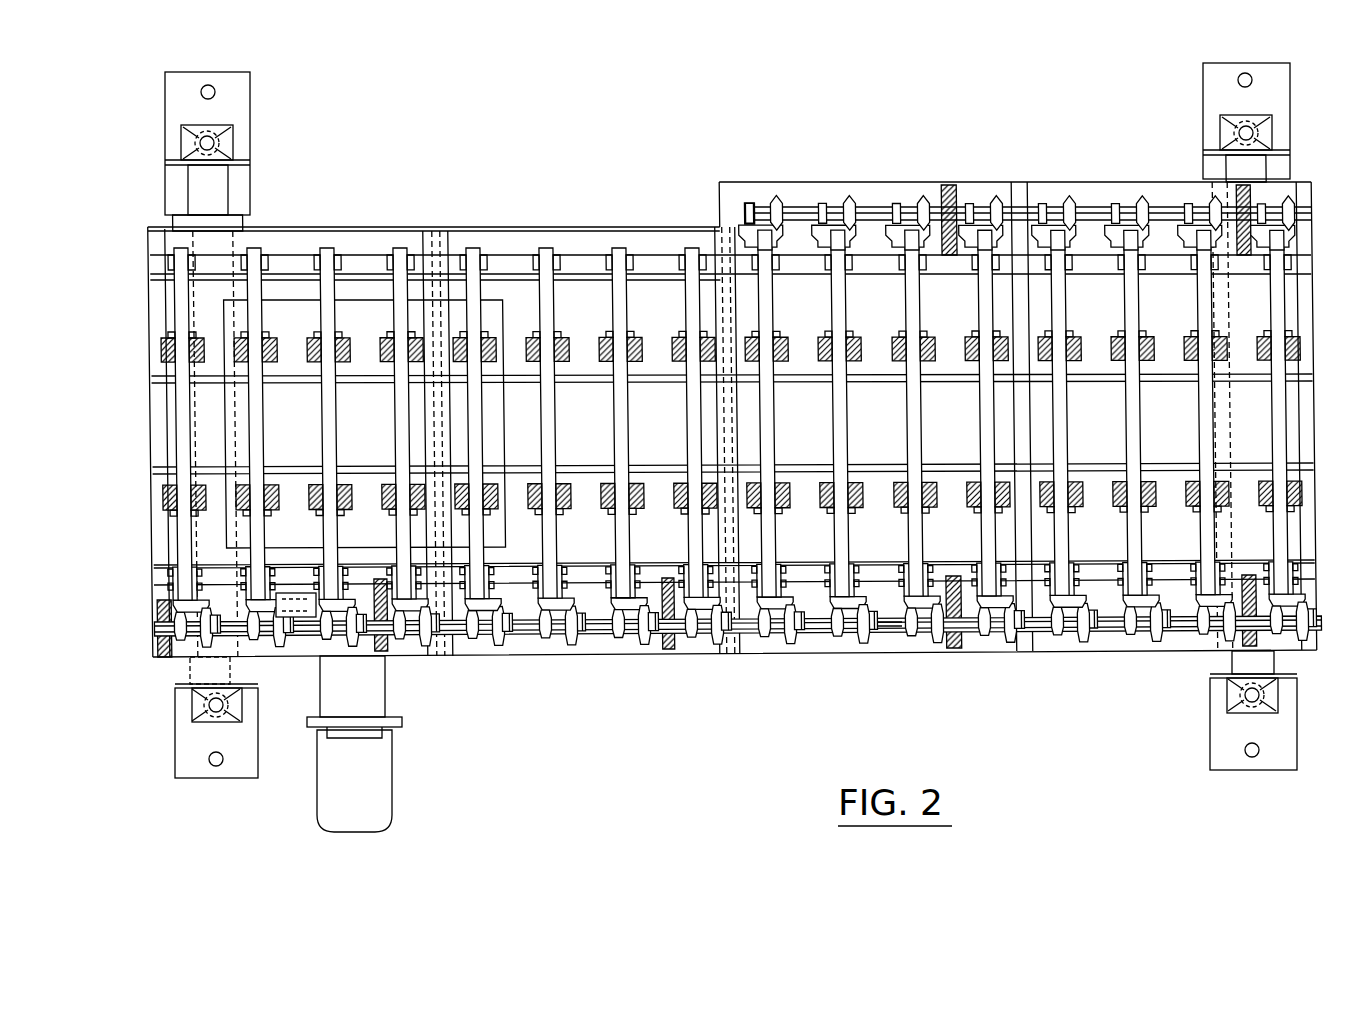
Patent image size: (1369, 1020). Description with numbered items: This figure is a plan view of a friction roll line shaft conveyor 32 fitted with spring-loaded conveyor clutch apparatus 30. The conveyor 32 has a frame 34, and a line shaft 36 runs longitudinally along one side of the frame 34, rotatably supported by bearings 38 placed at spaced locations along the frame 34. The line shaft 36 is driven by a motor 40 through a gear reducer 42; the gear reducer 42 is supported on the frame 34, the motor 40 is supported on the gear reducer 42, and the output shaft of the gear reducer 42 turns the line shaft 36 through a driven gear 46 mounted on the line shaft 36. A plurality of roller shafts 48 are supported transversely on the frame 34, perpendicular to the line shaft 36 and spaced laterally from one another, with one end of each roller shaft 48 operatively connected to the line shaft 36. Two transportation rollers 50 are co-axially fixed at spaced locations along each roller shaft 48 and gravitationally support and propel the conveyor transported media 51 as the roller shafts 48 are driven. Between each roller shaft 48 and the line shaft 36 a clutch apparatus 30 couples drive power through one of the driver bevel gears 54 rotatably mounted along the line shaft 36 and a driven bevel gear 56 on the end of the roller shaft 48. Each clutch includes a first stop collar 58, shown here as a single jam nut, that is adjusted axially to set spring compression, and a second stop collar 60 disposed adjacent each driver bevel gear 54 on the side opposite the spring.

The conveyor clutch apparatus 30 is at (848, 660).
The friction roll line shaft conveyor 32 is at (968, 124).
The frame 34 is at (1008, 640).
The line shaft 36 is at (888, 627).
The bearings 38 is at (158, 645).
The motor 40 is at (365, 825).
The gear reducer 42 is at (338, 688).
The driven gear 46 is at (300, 593).
The roller shafts 48 is at (613, 297).
The transportation rollers 50 is at (167, 500).
The conveyor transported media 51 is at (292, 300).
The driver bevel gears 54 is at (565, 645).
The driven bevel gear 56 is at (640, 600).
The first stop collar 58 is at (182, 655).
The second stop collar 60 is at (462, 643).